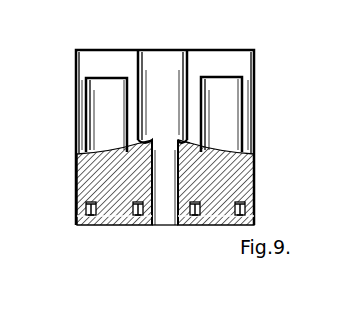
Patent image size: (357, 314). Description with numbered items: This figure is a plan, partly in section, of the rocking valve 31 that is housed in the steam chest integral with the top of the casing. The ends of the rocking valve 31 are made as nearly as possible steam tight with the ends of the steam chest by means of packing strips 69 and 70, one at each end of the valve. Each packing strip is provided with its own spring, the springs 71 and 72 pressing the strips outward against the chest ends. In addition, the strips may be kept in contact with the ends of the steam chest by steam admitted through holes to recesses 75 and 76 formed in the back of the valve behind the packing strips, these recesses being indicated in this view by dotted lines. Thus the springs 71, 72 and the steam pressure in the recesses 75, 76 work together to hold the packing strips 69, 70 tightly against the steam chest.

The rocking valve 31 is at (162, 137).
The packing strip 69 is at (122, 226).
The packing strip 70 is at (205, 226).
The spring 71 is at (86, 207).
The spring 72 is at (246, 206).
The recess 75 is at (100, 95).
The recess 76 is at (230, 118).